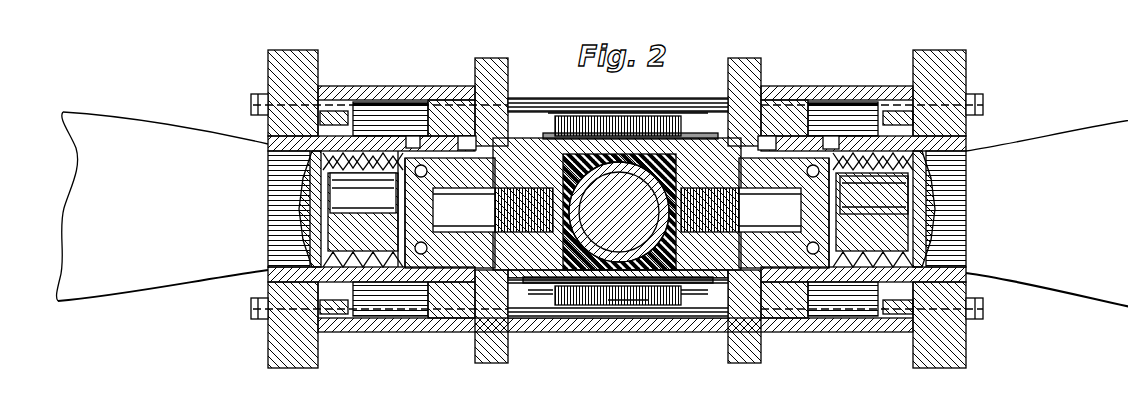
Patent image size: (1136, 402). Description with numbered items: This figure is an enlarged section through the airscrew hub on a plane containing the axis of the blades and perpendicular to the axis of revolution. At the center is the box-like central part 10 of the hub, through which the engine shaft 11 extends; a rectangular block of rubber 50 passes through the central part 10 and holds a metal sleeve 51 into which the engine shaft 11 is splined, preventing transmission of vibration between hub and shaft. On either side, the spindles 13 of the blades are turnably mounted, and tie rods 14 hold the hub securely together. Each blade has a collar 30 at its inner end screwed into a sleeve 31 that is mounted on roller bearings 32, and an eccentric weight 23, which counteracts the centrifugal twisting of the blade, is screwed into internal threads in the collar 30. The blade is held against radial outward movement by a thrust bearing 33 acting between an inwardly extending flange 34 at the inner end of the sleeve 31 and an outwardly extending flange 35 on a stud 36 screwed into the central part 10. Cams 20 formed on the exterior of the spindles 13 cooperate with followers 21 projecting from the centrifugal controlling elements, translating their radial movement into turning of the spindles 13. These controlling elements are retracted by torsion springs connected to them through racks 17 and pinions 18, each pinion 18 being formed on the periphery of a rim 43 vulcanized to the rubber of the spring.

The box-like central part 10 is at (513, 250).
The engine shaft 11 is at (613, 292).
The spindles 13 is at (387, 126).
The tie rods 14 is at (978, 97).
The racks 17 is at (690, 126).
The pinions 18 is at (592, 126).
The cams 20 is at (405, 128).
The followers 21 is at (455, 130).
The eccentric weight 23 is at (340, 210).
The collar 30 is at (277, 213).
The sleeve 31 is at (397, 265).
The roller bearings 32 is at (333, 312).
The thrust bearing 33 is at (412, 250).
The inwardly extending flange 34 is at (462, 255).
The outwardly extending flange 35 is at (418, 128).
The stud 36 is at (617, 213).
The rim 43 is at (563, 110).
The rectangular block of rubber 50 is at (657, 287).
The metal sleeve 51 is at (576, 281).